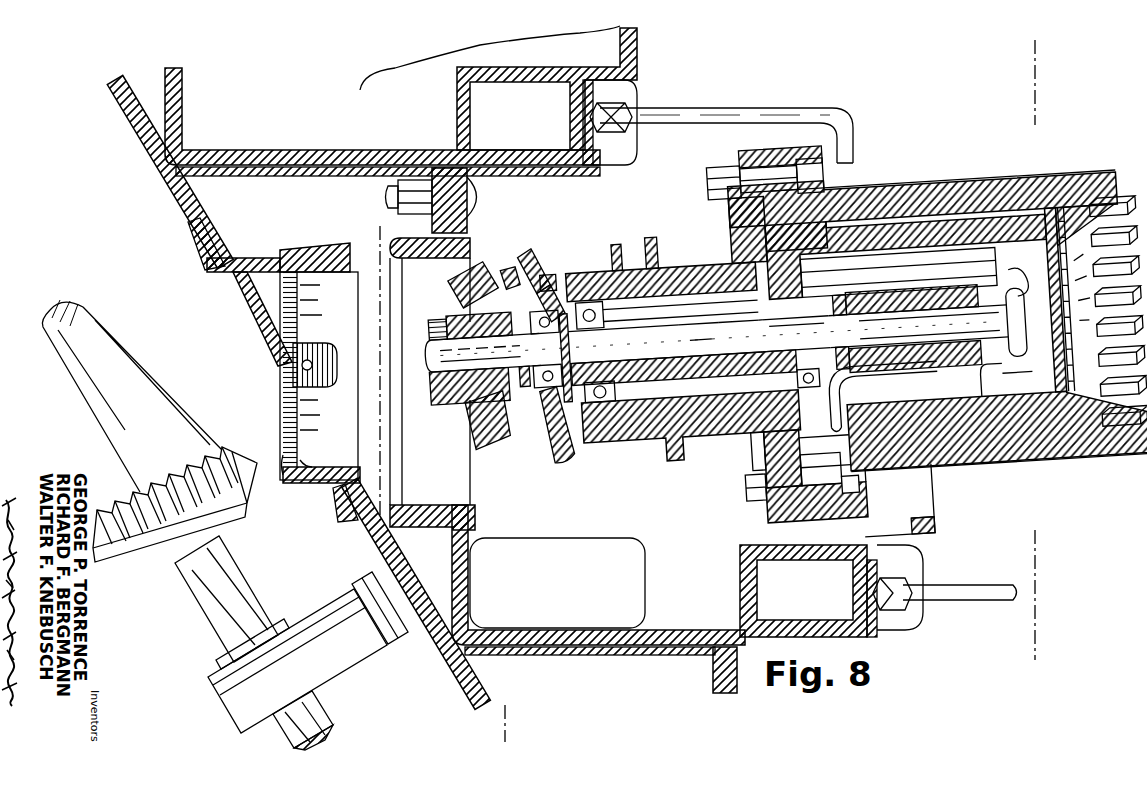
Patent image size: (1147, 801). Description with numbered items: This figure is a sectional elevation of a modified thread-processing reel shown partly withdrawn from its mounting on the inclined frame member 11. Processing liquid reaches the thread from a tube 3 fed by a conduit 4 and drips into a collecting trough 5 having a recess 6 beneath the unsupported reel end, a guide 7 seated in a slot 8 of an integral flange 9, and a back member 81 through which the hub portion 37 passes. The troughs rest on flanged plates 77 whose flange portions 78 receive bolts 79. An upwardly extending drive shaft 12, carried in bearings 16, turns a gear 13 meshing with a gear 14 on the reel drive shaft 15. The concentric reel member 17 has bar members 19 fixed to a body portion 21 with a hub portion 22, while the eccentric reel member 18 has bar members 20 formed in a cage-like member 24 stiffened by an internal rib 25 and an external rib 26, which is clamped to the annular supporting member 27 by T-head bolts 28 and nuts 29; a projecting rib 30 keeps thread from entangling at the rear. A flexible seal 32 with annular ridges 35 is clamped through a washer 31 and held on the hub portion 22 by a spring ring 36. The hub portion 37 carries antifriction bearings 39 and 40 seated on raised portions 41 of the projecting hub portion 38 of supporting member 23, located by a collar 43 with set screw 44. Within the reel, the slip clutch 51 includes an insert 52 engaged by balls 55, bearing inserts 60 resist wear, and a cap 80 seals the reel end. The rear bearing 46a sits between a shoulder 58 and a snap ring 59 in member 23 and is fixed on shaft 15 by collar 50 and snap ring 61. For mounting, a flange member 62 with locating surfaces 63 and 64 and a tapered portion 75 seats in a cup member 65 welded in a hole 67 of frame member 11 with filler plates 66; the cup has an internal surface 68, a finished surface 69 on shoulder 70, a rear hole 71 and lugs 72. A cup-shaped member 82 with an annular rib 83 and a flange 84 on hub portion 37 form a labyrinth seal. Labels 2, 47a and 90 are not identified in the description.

The base plate 2 is at (998, 478).
The tube 3 is at (731, 109).
The conduit 4 is at (518, 132).
The collecting trough 5 is at (410, 143).
The recess 6 is at (1020, 38).
The guide 7 is at (362, 231).
The slot 8 is at (625, 112).
The flange 9 is at (612, 140).
The inclined frame member 11 is at (130, 128).
The drive shaft 12 is at (142, 410).
The gear 13 is at (218, 452).
The gear 14 is at (470, 425).
The reel drive shaft 15 is at (665, 336).
The bearings 16 is at (220, 694).
The concentric reel member 17 is at (972, 193).
The eccentric reel member 18 is at (1045, 194).
The bar members 19 is at (1114, 360).
The bar members 20 is at (1112, 392).
The body portion 21 is at (1000, 404).
The hub portion 22 is at (884, 396).
The supporting member 23 is at (625, 372).
The cage-like member 24 is at (932, 196).
The internal annular reinforcing rib 25 is at (1078, 299).
The external annular rib 26 is at (800, 158).
The annular supporting member 27 is at (752, 160).
The T-head bolts 28 is at (834, 178).
The nuts 29 is at (716, 172).
The projecting rib 30 is at (858, 516).
The annular ring or washer 31 is at (794, 474).
The flexible seal 32 is at (782, 443).
The annular ridges 35 is at (790, 448).
The spring ring 36 is at (997, 429).
The hub portion 37 is at (622, 236).
The projecting hub portion 38 is at (737, 337).
The antifriction bearing 39 is at (605, 300).
The antifriction bearing 40 is at (893, 254).
The raised portions 41 is at (625, 400).
The collar 43 is at (898, 272).
The set screw 44 is at (818, 386).
The rear bearing 46a is at (479, 358).
The shaft section 47a is at (795, 334).
The collar 50 is at (436, 336).
The slip clutch 51 is at (832, 333).
The metallic insert 52 is at (925, 359).
The balls 55 is at (912, 305).
The shoulder 58 is at (569, 330).
The snap ring 59 is at (524, 374).
The metallic bearing inserts 60 is at (940, 336).
The snap ring 61 is at (556, 322).
The circular flange member 62 is at (547, 262).
The locating surface 63 is at (530, 250).
The locating surface 64 is at (520, 258).
The cup member 65 is at (312, 250).
The filler plates 66 is at (192, 242).
The hole 67 is at (262, 330).
The internal surface 68 is at (300, 290).
The finished surface 69 is at (306, 462).
The shoulder 70 is at (283, 480).
The hole 71 is at (282, 455).
The lugs 72 is at (318, 344).
The tapered portion 75 is at (552, 275).
The flanged plates 77 is at (248, 178).
The flange portion 78 is at (400, 236).
The bolts 79 is at (395, 192).
The cap 80 is at (1026, 300).
The back member 81 is at (470, 575).
The cup-shaped member 82 is at (430, 506).
The annular rib 83 is at (402, 420).
The cooperating flange 84 is at (665, 250).
The plate 90 is at (212, 272).